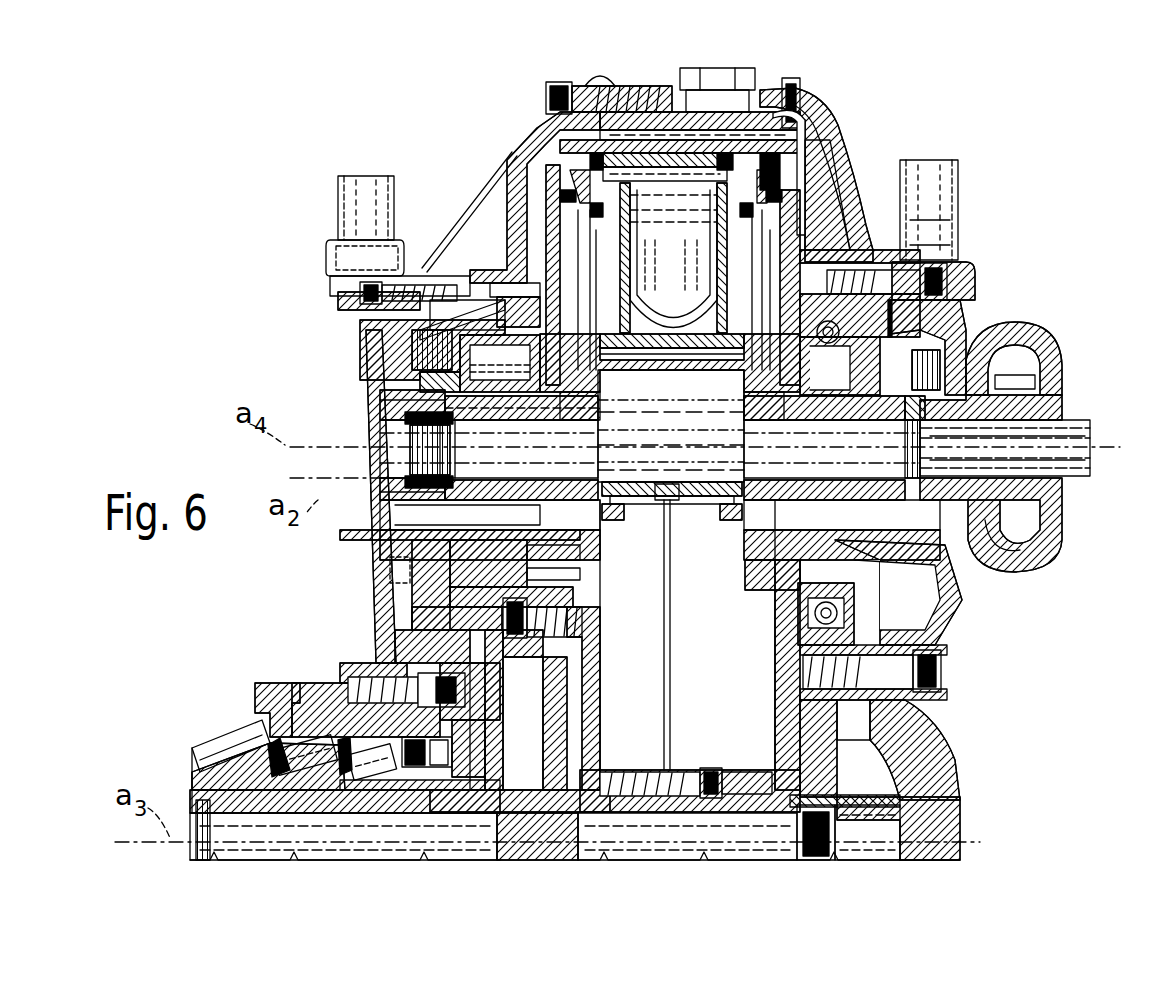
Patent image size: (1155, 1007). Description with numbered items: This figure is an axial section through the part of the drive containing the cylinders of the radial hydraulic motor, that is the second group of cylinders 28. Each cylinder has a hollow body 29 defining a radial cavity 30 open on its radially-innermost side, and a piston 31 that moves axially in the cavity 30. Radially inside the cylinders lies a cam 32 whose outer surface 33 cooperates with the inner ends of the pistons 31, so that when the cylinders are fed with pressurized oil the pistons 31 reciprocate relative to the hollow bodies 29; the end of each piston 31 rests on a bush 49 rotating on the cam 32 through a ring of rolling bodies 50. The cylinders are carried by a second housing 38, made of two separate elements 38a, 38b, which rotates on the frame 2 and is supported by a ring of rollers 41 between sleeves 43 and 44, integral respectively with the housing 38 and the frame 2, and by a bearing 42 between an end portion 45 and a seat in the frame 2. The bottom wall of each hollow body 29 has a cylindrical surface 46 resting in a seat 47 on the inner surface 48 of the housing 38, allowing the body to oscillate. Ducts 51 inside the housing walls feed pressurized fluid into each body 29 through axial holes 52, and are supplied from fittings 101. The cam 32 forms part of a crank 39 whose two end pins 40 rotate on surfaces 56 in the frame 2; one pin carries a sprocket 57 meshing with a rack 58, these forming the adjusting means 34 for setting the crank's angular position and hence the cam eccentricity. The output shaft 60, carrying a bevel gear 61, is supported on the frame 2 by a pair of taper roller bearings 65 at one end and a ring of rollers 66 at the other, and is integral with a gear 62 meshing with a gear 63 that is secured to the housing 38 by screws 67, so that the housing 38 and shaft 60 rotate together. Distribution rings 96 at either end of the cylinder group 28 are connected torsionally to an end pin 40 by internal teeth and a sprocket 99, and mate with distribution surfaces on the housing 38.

The frame 2 is at (860, 742).
The second group of cylinders 28 is at (875, 215).
The hollow body 29 is at (836, 220).
The radial cavity 30 is at (672, 290).
The piston 31 is at (648, 280).
The cam 32 is at (688, 500).
The outer surface 33 is at (650, 504).
The adjusting means 34 is at (1024, 355).
The second housing 38 is at (678, 128).
The housing element 38a is at (556, 135).
The housing element 38b is at (820, 140).
The crank 39 is at (686, 500).
The end pins 40 is at (560, 450).
The ring of rollers 41 is at (440, 285).
The bearing 42 is at (860, 235).
The sleeve 43 is at (440, 378).
The sleeve 44 is at (395, 290).
The end portion 45 is at (920, 355).
The cylindrical surface 46 is at (705, 150).
The seat 47 is at (768, 150).
The inner surface 48 is at (628, 768).
The bush 49 is at (708, 500).
The ring of rolling bodies 50 is at (630, 520).
The ducts 51 is at (805, 395).
The axial holes 52 is at (586, 86).
The surfaces 56 is at (495, 470).
The sprocket 57 is at (1060, 400).
The rack 58 is at (1062, 548).
The output shaft 60 is at (690, 835).
The bevel gear 61 is at (232, 745).
The gear 62 is at (500, 725).
The gear 63 is at (510, 285).
The taper roller bearings 65 is at (345, 740).
The ring of rollers 66 is at (915, 770).
The screws 67 is at (582, 618).
The rings 96 is at (935, 355).
The sprocket 99 is at (945, 550).
The fittings 101 is at (940, 180).